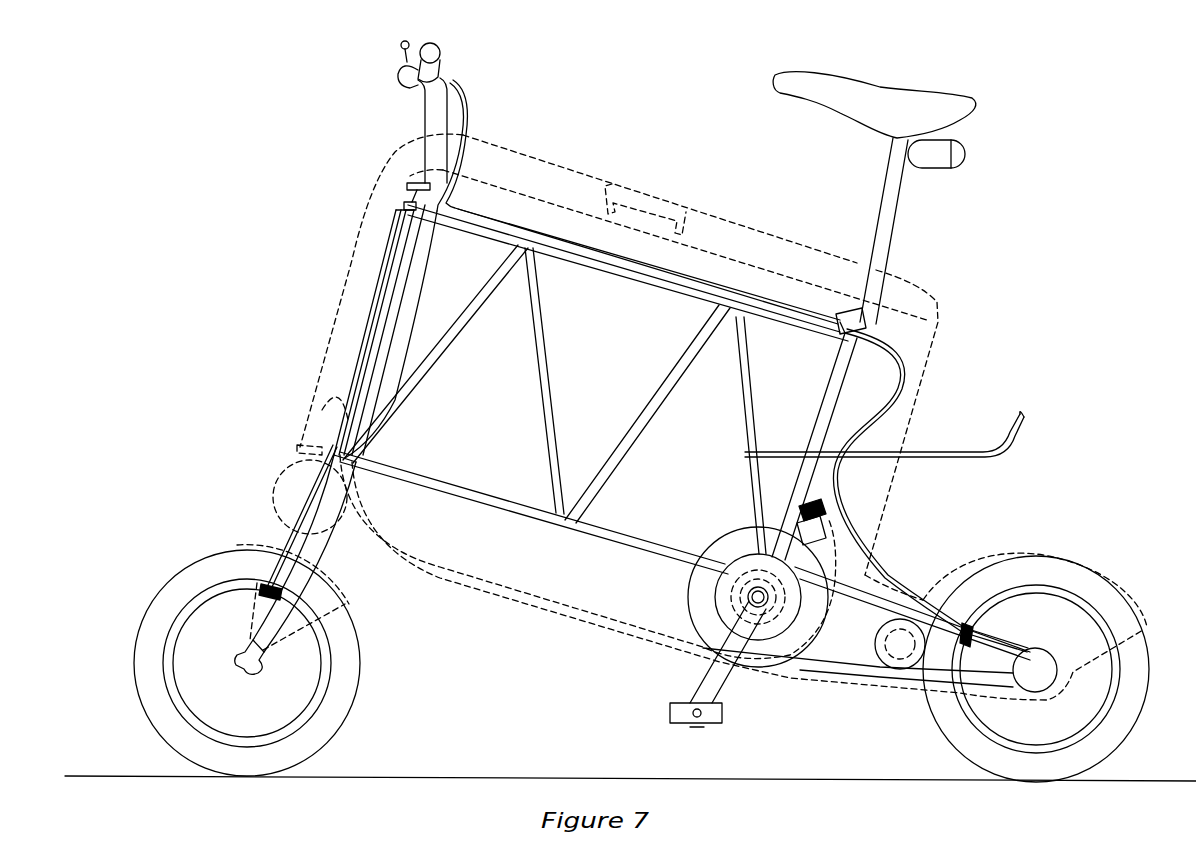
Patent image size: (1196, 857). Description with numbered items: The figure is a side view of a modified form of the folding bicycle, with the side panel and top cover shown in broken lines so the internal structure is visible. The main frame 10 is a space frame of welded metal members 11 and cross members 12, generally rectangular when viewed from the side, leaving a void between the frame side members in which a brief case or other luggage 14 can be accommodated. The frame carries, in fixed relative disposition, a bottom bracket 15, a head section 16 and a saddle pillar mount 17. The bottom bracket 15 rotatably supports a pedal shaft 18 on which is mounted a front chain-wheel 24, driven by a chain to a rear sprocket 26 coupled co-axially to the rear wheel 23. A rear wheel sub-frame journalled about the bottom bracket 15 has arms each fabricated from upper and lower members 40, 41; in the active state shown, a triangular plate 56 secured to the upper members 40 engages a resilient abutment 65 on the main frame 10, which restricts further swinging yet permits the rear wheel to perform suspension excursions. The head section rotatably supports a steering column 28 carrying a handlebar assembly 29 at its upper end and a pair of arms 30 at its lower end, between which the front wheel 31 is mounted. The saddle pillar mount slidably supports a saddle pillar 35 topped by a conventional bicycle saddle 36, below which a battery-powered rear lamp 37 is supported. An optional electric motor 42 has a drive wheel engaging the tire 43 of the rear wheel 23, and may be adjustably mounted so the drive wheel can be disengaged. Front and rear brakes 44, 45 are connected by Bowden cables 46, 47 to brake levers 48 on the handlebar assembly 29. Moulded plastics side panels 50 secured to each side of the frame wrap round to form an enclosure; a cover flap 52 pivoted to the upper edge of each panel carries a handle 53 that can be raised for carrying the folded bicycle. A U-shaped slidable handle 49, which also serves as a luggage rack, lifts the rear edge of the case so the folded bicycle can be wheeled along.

The main frame 10 is at (390, 284).
The members 11 is at (430, 395).
The cross members 12 is at (467, 228).
The luggage 14 is at (503, 208).
The bottom bracket 15 is at (777, 617).
The head section 16 is at (350, 370).
The saddle pillar mount 17 is at (860, 322).
The pedal shaft 18 is at (760, 593).
The rear wheel 23 is at (1068, 600).
The front chain-wheel 24 is at (687, 607).
The rear sprocket 26 is at (1040, 647).
The steering column 28 is at (423, 175).
The handlebar assembly 29 is at (435, 110).
The arms 30 is at (300, 580).
The front wheel 31 is at (192, 652).
The saddle pillar 35 is at (887, 235).
The bicycle saddle 36 is at (917, 128).
The rear lamp 37 is at (935, 163).
The upper members 40 is at (867, 593).
The lower members 41 is at (875, 670).
The electric motor 42 is at (900, 647).
The tire 43 is at (947, 713).
The front brake 44 is at (260, 587).
The rear brake 45 is at (963, 637).
The Bowden cable 46 is at (897, 355).
The Bowden cable 47 is at (417, 267).
The brake levers 48 is at (403, 57).
The handle 49 is at (1018, 440).
The side panels 50 is at (532, 572).
The cover flap 52 is at (713, 233).
The handle 53 is at (622, 197).
The triangular plate 56 is at (830, 553).
The resilient abutment 65 is at (838, 509).